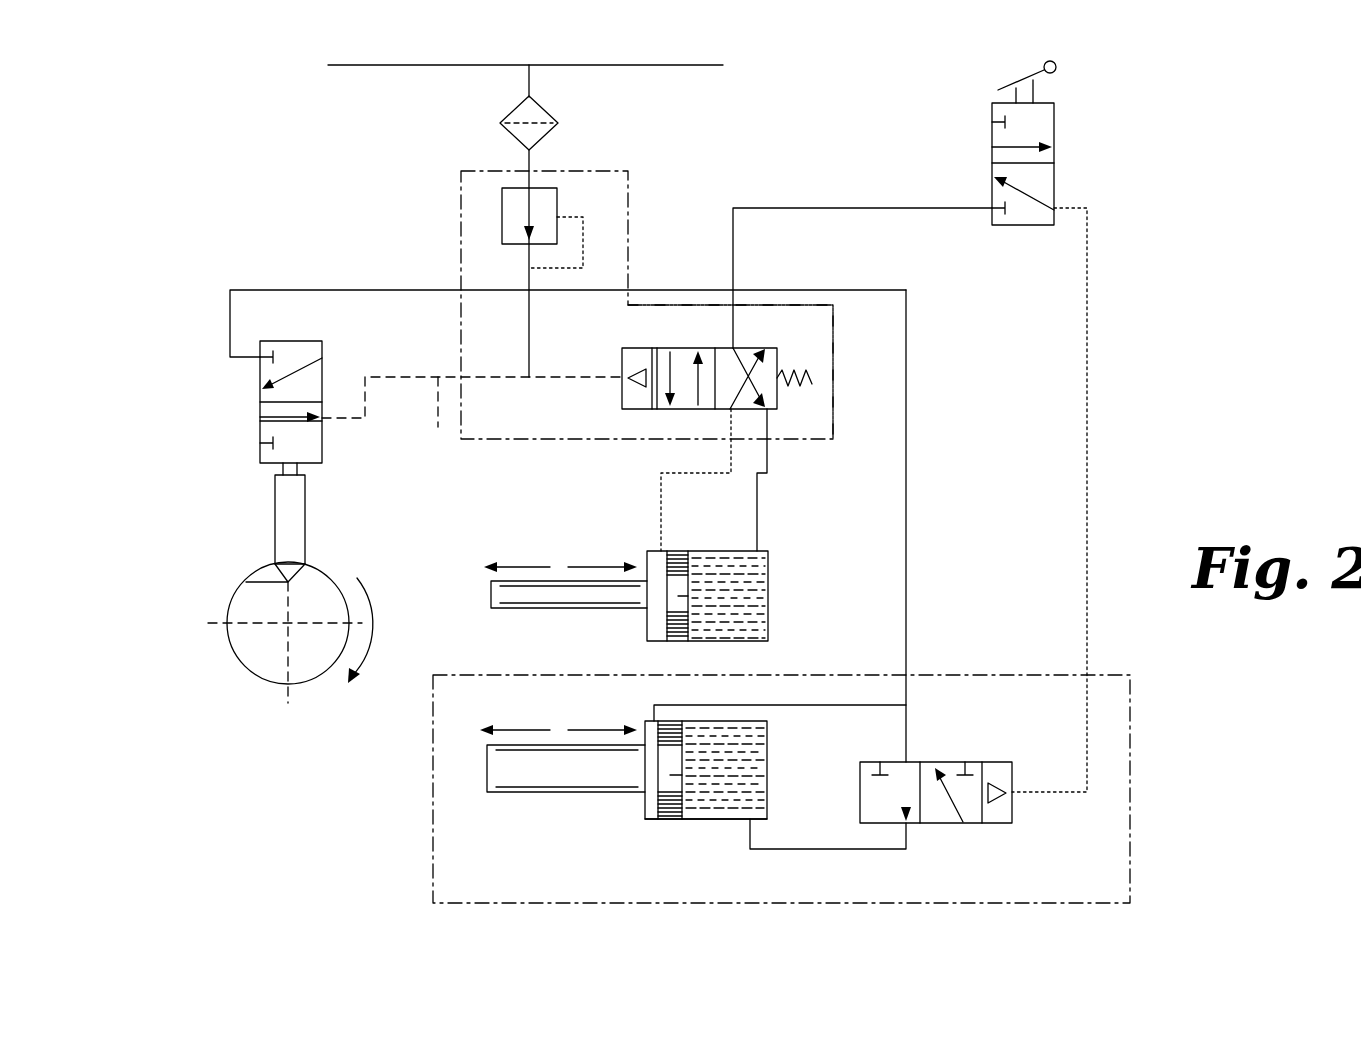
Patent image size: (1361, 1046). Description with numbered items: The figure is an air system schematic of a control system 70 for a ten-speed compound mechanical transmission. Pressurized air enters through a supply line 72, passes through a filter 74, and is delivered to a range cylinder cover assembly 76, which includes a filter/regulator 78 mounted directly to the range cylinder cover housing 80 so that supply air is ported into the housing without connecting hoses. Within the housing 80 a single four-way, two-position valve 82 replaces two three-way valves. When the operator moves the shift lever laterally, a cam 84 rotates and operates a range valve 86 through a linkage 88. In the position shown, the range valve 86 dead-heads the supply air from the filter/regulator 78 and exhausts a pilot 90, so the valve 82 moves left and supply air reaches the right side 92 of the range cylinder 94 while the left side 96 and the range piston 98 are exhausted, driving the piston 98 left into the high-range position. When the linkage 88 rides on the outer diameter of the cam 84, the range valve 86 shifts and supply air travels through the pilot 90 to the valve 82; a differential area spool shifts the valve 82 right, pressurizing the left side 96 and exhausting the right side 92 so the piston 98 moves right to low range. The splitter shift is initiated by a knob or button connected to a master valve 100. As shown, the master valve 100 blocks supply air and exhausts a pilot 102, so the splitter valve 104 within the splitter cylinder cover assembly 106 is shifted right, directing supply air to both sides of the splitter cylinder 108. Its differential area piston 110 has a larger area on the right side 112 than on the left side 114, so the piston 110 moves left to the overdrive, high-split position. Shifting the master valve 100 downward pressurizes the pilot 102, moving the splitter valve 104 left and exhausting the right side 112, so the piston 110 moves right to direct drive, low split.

The control system 70 is at (226, 116).
The supply line 72 is at (475, 65).
The filter 74 is at (548, 108).
The range cylinder cover assembly 76 is at (628, 230).
The filter/regulator 78 is at (490, 212).
The range cylinder cover housing 80 is at (833, 390).
The four-way, two-position valve 82 is at (658, 409).
The cam 84 is at (275, 683).
The range valve 86 is at (260, 450).
The linkage 88 is at (305, 528).
The pilot 90 is at (438, 427).
The right side of range cylinder 92 is at (768, 597).
The range cylinder 94 is at (782, 630).
The left side of range cylinder 96 is at (653, 622).
The range piston 98 is at (677, 551).
The master valve 100 is at (1055, 185).
The pilot 102 is at (1087, 368).
The splitter valve 104 is at (860, 786).
The splitter cylinder cover assembly 106 is at (1130, 832).
The splitter cylinder 108 is at (767, 770).
The differential area piston 110 is at (645, 805).
The right side of splitter piston 112 is at (708, 836).
The left side of splitter piston 114 is at (637, 826).